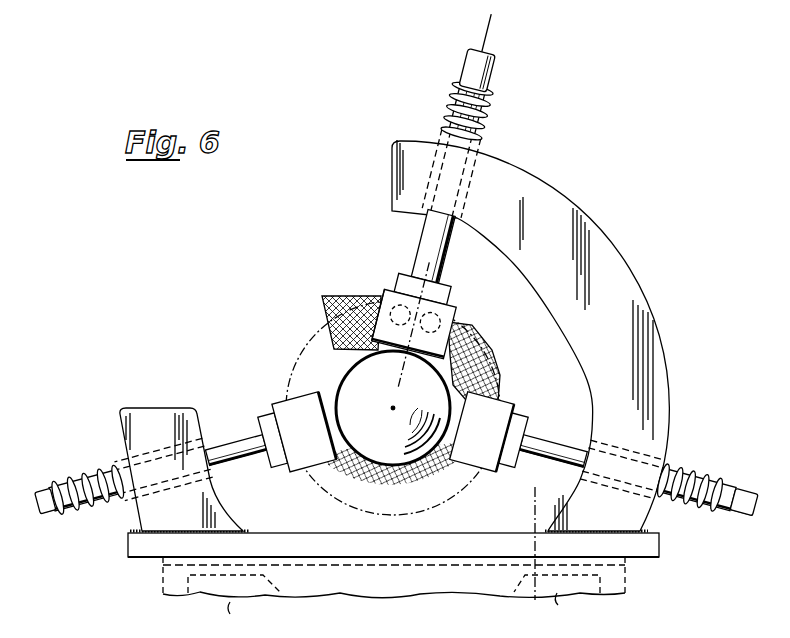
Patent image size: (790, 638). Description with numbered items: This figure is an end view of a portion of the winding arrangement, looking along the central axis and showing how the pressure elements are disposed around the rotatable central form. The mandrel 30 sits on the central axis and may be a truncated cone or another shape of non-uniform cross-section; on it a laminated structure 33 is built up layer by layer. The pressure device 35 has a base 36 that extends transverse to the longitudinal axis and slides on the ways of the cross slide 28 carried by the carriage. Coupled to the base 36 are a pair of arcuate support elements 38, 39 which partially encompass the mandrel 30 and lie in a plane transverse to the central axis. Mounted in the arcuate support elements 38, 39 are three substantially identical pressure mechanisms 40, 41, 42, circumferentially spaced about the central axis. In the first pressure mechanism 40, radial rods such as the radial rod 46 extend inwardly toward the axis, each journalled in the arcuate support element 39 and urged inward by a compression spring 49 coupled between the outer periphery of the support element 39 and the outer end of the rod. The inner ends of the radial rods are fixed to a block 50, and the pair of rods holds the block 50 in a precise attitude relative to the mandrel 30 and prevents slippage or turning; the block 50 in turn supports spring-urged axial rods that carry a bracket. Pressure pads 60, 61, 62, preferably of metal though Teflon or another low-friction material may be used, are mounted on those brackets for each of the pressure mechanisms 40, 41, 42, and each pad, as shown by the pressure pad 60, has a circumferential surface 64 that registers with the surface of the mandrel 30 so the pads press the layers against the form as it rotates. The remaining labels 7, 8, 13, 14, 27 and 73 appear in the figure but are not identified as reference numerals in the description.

The section line 7- 7 is at (526, 490).
The section line 8- 8 is at (479, 25).
The left portion of base 13 is at (242, 611).
The right portion of base 14 is at (568, 607).
The hidden mounting members 27 is at (200, 572).
The cross slide 28 is at (405, 588).
The mandrel 30 is at (338, 393).
The laminated structure 33 is at (484, 347).
The pressure device 35 is at (637, 240).
The base 36 is at (660, 545).
The arcuate support element 38 is at (160, 394).
The arcuate support element 39 is at (639, 292).
The first pressure mechanism 40 is at (469, 283).
The pressure mechanism 41 is at (540, 415).
The pressure mechanism 42 is at (264, 474).
The radial rod 46 is at (423, 244).
The compression spring 49 is at (492, 103).
The block 50 is at (460, 311).
The pressure pad 60 is at (361, 297).
The pressure pad 61 is at (447, 490).
The pressure pad 62 is at (338, 456).
The circumferential surface 64 is at (388, 360).
The upper left pad 73 is at (323, 296).